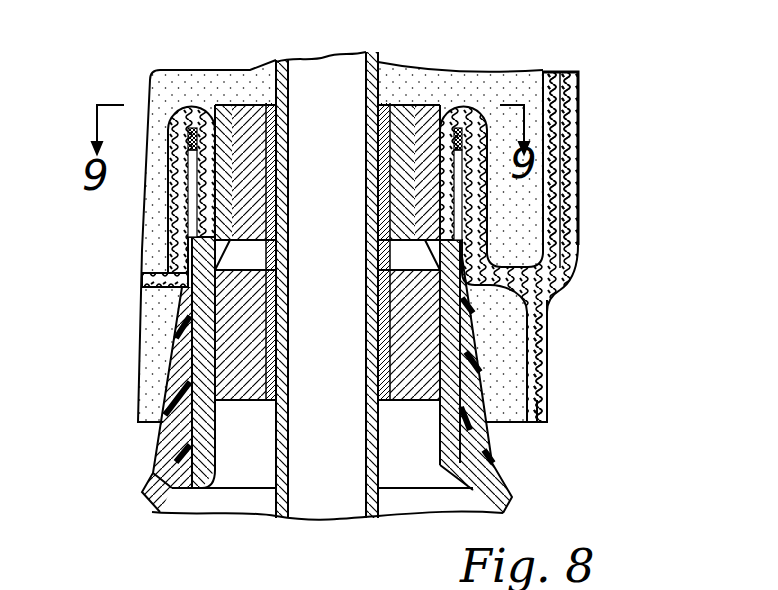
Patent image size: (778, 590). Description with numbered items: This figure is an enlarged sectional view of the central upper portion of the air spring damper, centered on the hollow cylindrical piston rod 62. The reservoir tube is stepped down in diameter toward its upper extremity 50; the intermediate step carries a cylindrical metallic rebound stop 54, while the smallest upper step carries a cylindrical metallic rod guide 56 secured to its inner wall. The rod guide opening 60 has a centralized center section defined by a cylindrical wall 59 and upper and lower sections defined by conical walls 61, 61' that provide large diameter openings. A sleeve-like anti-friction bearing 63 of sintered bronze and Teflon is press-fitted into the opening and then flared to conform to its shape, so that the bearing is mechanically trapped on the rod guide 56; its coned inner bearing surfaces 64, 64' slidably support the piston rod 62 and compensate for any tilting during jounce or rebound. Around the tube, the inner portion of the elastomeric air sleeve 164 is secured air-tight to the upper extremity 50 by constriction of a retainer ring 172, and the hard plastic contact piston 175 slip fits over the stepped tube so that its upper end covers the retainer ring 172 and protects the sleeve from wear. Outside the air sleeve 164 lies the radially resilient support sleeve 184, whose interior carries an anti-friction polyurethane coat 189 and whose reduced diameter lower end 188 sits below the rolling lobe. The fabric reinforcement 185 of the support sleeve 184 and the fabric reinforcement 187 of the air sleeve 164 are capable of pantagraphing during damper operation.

The upper step of reservoir tube 50 is at (438, 262).
The rebound stop 54 is at (418, 334).
The rod guide 56 is at (405, 135).
The cylindrical wall 59 is at (262, 168).
The rod guide opening 60 is at (271, 95).
The upper conical wall 61 is at (409, 270).
The lower conical wall 61' is at (418, 275).
The piston rod 62 is at (378, 66).
The anti-friction bearing 63 is at (372, 167).
The upper coned inner bearing surface 64 is at (245, 214).
The lower coned inner bearing surface 64' is at (245, 275).
The elastomeric air sleeve 164 is at (540, 80).
The retainer ring 172 is at (190, 142).
The contact piston 175 is at (180, 372).
The support sleeve 184 is at (580, 100).
The fabric reinforcement of support sleeve 185 is at (553, 353).
The fabric reinforcement of air sleeve 187 is at (543, 104).
The lower end of support sleeve 188 is at (553, 391).
The polyurethane coat 189 is at (532, 410).